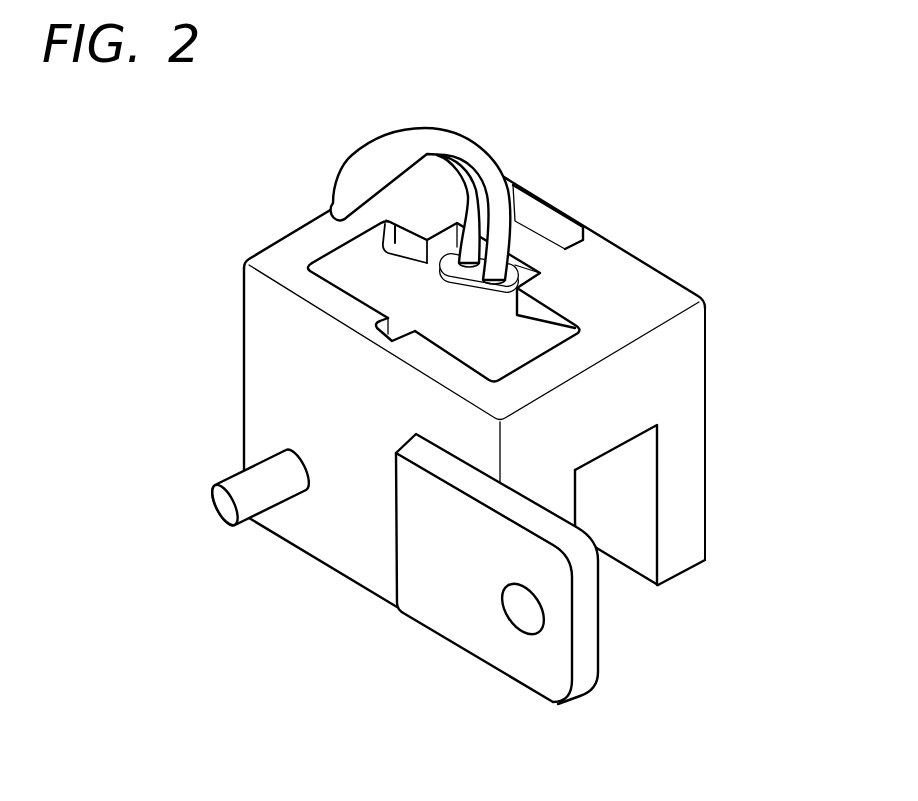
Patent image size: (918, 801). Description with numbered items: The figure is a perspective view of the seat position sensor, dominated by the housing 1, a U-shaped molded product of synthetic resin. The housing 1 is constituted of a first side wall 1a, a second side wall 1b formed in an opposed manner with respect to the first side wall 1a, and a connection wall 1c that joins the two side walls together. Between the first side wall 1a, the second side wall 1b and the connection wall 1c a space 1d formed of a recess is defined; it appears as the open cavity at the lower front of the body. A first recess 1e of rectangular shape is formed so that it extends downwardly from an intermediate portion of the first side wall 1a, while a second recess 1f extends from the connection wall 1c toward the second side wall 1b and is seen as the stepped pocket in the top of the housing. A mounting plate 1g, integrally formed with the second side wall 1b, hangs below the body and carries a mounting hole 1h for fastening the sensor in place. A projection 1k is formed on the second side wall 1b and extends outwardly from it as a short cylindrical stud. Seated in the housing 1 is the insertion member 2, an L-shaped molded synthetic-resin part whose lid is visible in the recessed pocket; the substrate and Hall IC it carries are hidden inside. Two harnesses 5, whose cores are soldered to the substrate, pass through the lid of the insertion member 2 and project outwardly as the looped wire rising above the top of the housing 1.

The housing 1 is at (243, 255).
The first side wall 1a is at (707, 388).
The second side wall 1b is at (278, 402).
The connection wall 1c is at (630, 350).
The space 1d is at (603, 513).
The first recess 1e is at (538, 217).
The second recess 1f is at (393, 287).
The mounting plate 1g is at (488, 600).
The mounting hole 1h is at (530, 603).
The projection 1k is at (273, 505).
The insertion member 2 is at (381, 243).
The harnesses 5 is at (441, 125).